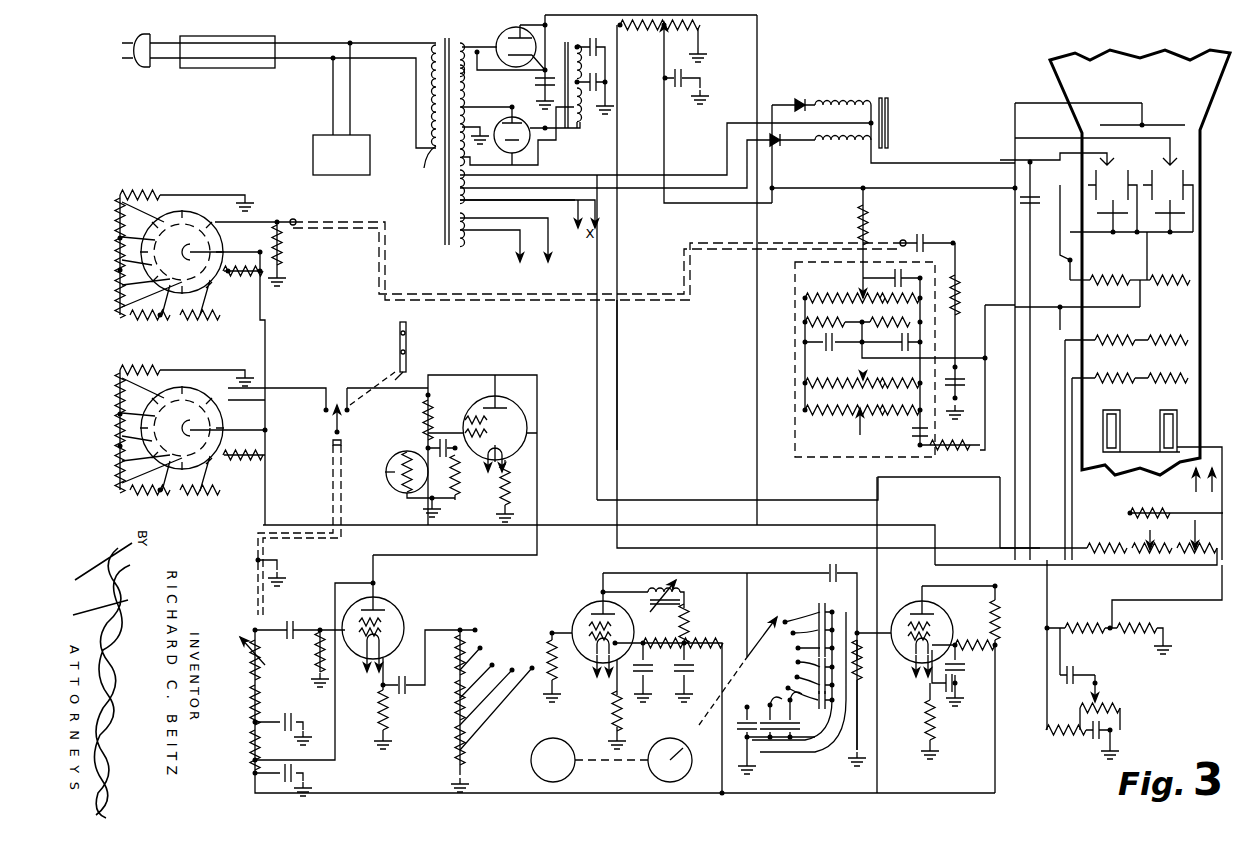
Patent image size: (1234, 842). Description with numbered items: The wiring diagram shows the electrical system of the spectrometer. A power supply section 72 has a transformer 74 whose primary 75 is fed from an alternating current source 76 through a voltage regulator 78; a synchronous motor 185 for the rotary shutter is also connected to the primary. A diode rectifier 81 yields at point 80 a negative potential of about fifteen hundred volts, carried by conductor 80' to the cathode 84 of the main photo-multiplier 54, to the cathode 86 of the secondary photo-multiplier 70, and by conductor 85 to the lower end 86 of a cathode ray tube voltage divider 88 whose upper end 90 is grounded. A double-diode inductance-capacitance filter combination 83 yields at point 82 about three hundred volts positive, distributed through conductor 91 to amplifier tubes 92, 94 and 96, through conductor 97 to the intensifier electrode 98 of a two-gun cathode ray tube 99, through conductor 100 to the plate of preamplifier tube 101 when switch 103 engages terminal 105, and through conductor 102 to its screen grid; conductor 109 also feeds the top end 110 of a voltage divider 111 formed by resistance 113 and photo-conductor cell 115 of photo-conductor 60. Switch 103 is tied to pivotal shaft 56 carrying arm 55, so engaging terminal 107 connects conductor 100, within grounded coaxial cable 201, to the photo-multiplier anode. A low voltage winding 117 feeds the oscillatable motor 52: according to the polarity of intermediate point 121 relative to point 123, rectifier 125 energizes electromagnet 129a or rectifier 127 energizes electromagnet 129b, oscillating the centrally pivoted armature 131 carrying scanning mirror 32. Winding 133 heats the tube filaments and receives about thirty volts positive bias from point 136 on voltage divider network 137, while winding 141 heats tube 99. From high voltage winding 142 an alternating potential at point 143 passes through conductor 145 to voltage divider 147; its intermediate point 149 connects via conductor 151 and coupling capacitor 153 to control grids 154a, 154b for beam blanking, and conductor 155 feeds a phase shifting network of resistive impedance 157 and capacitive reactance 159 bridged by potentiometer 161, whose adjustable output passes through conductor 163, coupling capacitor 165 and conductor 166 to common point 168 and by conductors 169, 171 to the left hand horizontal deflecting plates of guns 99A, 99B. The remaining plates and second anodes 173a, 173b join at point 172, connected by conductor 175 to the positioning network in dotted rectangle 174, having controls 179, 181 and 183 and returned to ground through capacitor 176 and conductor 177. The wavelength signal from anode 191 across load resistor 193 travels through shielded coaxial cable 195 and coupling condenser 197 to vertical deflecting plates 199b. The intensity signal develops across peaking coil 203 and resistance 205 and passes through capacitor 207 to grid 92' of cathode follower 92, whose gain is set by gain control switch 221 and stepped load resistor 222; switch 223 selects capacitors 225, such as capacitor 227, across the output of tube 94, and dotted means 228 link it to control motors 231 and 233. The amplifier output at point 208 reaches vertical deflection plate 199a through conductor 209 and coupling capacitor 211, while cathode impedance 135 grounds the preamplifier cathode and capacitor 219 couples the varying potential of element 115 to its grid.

The source of alternating current 76 is at (150, 32).
The voltage regulator 78 is at (275, 37).
The self-starting synchronous motor 185 is at (372, 135).
The power supply section 72 is at (432, 40).
The transformer 74 is at (452, 42).
The primary 75 is at (436, 148).
The low voltage transformer winding 117 is at (457, 188).
The power transformer winding 133 is at (465, 211).
The low voltage winding 141 is at (467, 244).
The point 80 is at (639, 55).
The diode rectifier 81 is at (500, 63).
The high voltage winding 142 is at (472, 100).
The point 143 is at (508, 104).
The double-diode inductance-capacitance filter combination 83 is at (567, 61).
The point 82 is at (621, 30).
The point 136 is at (664, 32).
The voltage divider network 137 is at (700, 38).
The rectifier 127 is at (802, 96).
The electromagnet 129b is at (814, 102).
The oscillatable electric motor 52 is at (871, 100).
The centrally pivoted armature 131 is at (895, 105).
The scanning mirror 32 is at (888, 131).
The point 123 is at (867, 124).
The rectifier 125 is at (780, 147).
The electromagnet 129a is at (823, 150).
The intermediate point 121 is at (772, 148).
The shielded coaxial cable 195 is at (516, 304).
The conductor 145 is at (597, 273).
The conductor 80' is at (570, 509).
The coupling condenser 197 is at (920, 232).
The dotted rectangle 174 is at (795, 445).
The control 179 is at (863, 278).
The capacitor 176 is at (900, 343).
The conductor 177 is at (920, 355).
The control 181 is at (863, 375).
The control 183 is at (860, 435).
The conductor 175 is at (1000, 277).
The conductor 97 is at (877, 488).
The cathode ray tube 99 is at (1103, 56).
The intensifier electrode 98 is at (1148, 110).
The vertical deflection plate 199a is at (1100, 162).
The vertical deflecting plates 199b is at (1175, 160).
The electron gun 99A is at (1114, 202).
The electron gun 99B is at (1168, 202).
The conductor 169 is at (1082, 185).
The coupling capacitor 211 is at (1038, 201).
The conductor 209 is at (1034, 240).
The point 172 is at (1064, 230).
The second anode 173a is at (1109, 276).
The second anode 173b is at (1165, 276).
The conductor 171 is at (1078, 318).
The common point 168 is at (1060, 313).
The control grid 154a is at (1107, 374).
The control grid 154b is at (1165, 374).
The conductor 166 is at (1062, 458).
The coupling capacitor 153 is at (1177, 493).
The upper end 90 is at (1088, 550).
The cathode ray tube voltage divider 88 is at (1157, 552).
The lower end 86 is at (1212, 552).
The voltage divider 147 is at (1072, 621).
The intermediate point 149 is at (1120, 636).
The conductor 151 is at (1185, 600).
The coupling capacitor 165 is at (1075, 668).
The conductor 163 is at (1098, 678).
The potentiometer 161 is at (1090, 688).
The conductor 155 is at (1047, 704).
The resistive impedance 157 is at (1082, 734).
The capacitive reactance 159 is at (1098, 743).
The secondary photo-multiplier 70 is at (184, 198).
The anode 191 is at (222, 235).
The load resistor 193 is at (280, 250).
The photo-multiplier 54 is at (208, 380).
The cathode 84 is at (229, 430).
The terminal 107 is at (330, 402).
The terminal 105 is at (353, 402).
The switch 103 is at (335, 416).
The conductor 100 is at (335, 484).
The grounded coaxial cable 201 is at (298, 548).
The pivotal shaft 56 is at (383, 381).
The arm 55 is at (408, 345).
The conductor 109 is at (537, 395).
The preamplifier tube 101 is at (530, 446).
The cathode impedance 135 is at (507, 490).
The top end 110 is at (428, 390).
The capacitor 219 is at (439, 428).
The resistance 113 is at (428, 448).
The voltage divider 111 is at (385, 469).
The photo-conductor cell 115 is at (415, 477).
The second light sensitive element 60 is at (396, 494).
The conductor 102 is at (470, 555).
The amplifier tube 92 is at (345, 657).
The grid 92' is at (408, 689).
The capacitor 207 is at (297, 624).
The peaking coil 203 is at (265, 650).
The resistance 205 is at (252, 717).
The gain control switch 221 is at (488, 640).
The stepped load resistor 222 is at (460, 721).
The second control motor 233 is at (537, 770).
The first control motor 231 is at (650, 774).
The means for connecting an electrical servo system 228 is at (623, 760).
The amplifier tube 94 is at (582, 610).
The switch 223 is at (759, 646).
The capacitor 227 is at (830, 612).
The series of associated capacitors 225 is at (760, 745).
The conductor 85 is at (940, 550).
The amplifier tube 96 is at (911, 602).
The point 208 is at (995, 590).
The conductor 91 is at (879, 770).